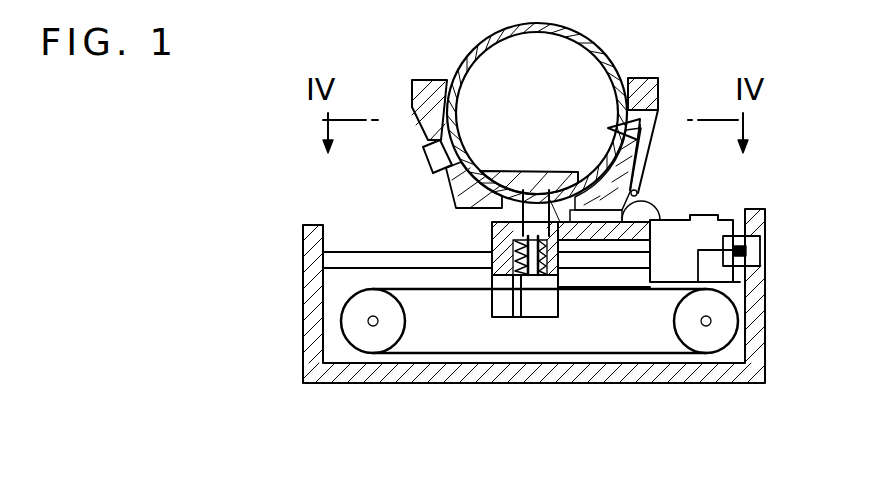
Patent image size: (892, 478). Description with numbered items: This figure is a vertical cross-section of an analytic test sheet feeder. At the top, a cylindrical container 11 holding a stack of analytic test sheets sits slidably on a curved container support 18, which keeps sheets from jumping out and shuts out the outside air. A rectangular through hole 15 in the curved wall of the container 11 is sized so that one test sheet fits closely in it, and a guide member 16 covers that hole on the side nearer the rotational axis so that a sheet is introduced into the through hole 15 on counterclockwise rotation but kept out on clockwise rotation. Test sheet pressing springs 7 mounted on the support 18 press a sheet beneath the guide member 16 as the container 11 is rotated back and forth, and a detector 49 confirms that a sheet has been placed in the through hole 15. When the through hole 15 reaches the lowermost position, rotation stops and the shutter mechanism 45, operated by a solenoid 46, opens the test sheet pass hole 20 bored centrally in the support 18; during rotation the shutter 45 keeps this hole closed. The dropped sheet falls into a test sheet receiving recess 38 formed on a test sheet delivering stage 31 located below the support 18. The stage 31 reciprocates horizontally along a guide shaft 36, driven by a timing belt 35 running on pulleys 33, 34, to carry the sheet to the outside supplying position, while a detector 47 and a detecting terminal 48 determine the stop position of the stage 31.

The test sheet pressing spring 7 is at (657, 136).
The cylindrical container 11 is at (600, 52).
The rectangular through hole 15 is at (615, 138).
The guide member 16 is at (510, 172).
The container support 18 is at (428, 80).
The test sheet pass hole 20 is at (572, 224).
The test sheet delivering stage 31 is at (672, 221).
The pulley 33 is at (714, 344).
The pulley 34 is at (352, 344).
The timing belt 35 is at (447, 363).
The guide shaft 36 is at (343, 250).
The test sheet receiving recess 38 is at (706, 218).
The shutter mechanism 45 is at (492, 221).
The solenoid 46 is at (530, 313).
The detector 47 is at (762, 246).
The detecting terminal 48 is at (727, 277).
The detector 49 is at (428, 168).